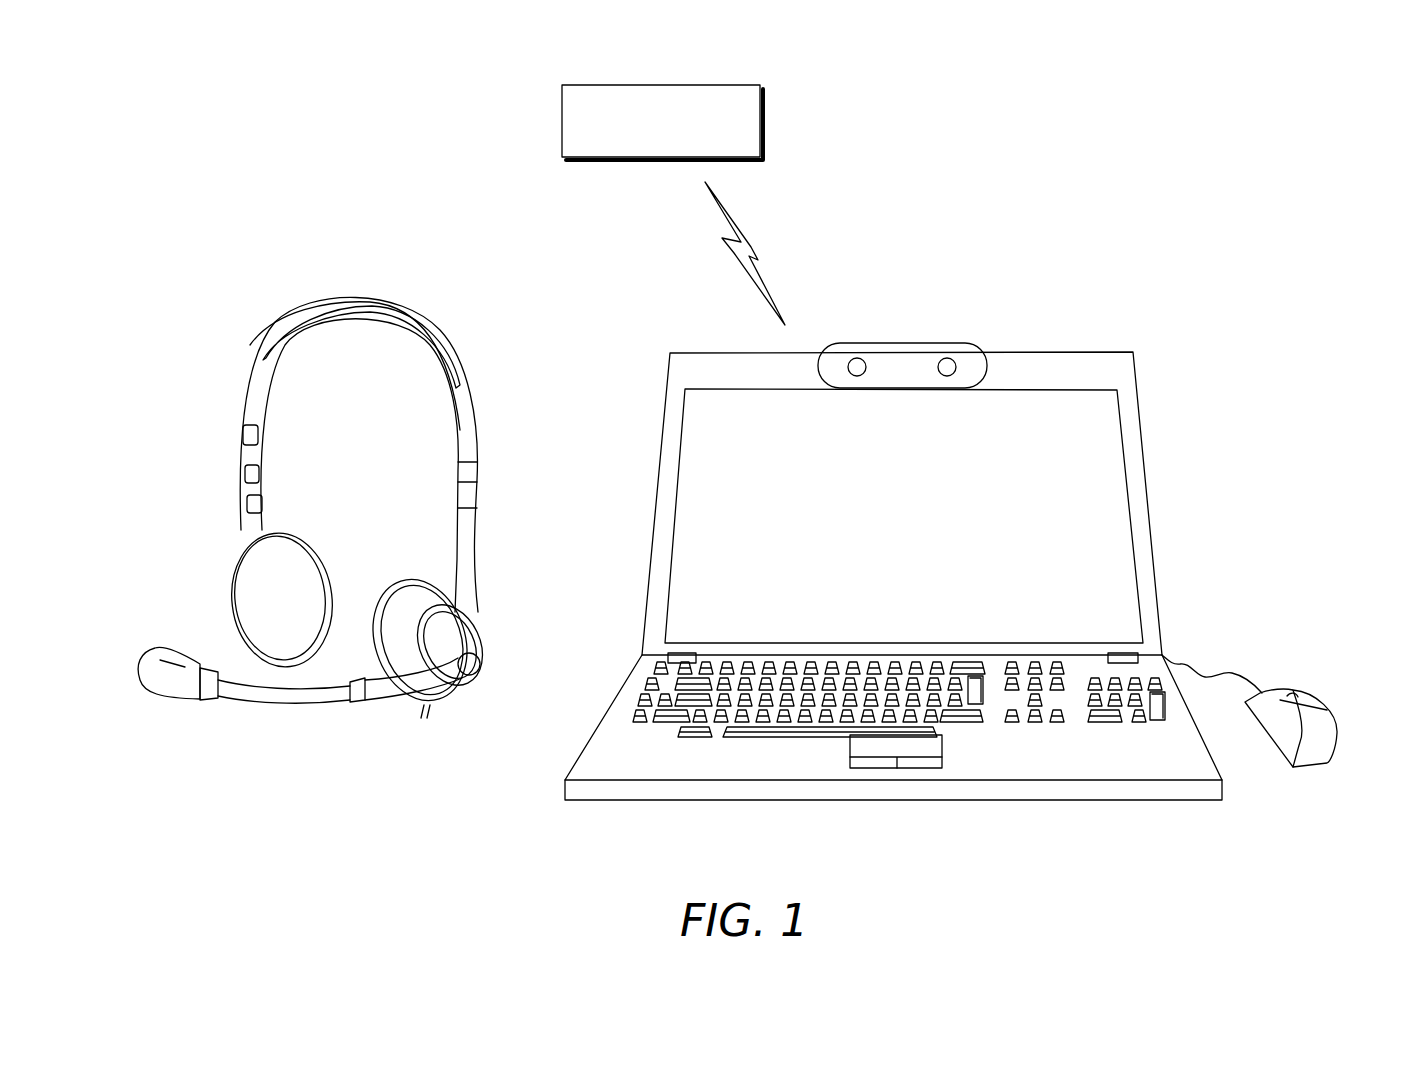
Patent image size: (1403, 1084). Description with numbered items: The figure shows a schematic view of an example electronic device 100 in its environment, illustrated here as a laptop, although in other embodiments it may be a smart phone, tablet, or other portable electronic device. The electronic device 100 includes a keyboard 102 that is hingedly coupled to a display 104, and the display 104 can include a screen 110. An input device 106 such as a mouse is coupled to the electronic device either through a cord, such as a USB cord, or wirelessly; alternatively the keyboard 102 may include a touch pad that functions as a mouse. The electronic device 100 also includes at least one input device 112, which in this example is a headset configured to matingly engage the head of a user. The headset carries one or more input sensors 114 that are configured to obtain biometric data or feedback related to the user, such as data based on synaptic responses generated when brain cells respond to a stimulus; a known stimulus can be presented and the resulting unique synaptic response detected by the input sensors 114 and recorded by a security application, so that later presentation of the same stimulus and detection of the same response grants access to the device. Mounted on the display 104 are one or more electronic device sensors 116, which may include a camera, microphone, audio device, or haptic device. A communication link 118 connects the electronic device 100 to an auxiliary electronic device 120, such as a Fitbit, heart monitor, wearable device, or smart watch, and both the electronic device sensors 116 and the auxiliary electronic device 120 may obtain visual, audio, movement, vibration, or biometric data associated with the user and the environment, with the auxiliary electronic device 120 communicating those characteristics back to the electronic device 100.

The electronic device 100 is at (1179, 324).
The keyboard 102 is at (1130, 755).
The display 104 is at (928, 477).
The input device 106 is at (1308, 695).
The screen 110 is at (921, 529).
The input device 112 is at (460, 403).
The input sensors 114 is at (252, 435).
The electronic device sensors 116 is at (857, 358).
The communication link 118 is at (748, 238).
The auxiliary electronic device 120 is at (712, 84).